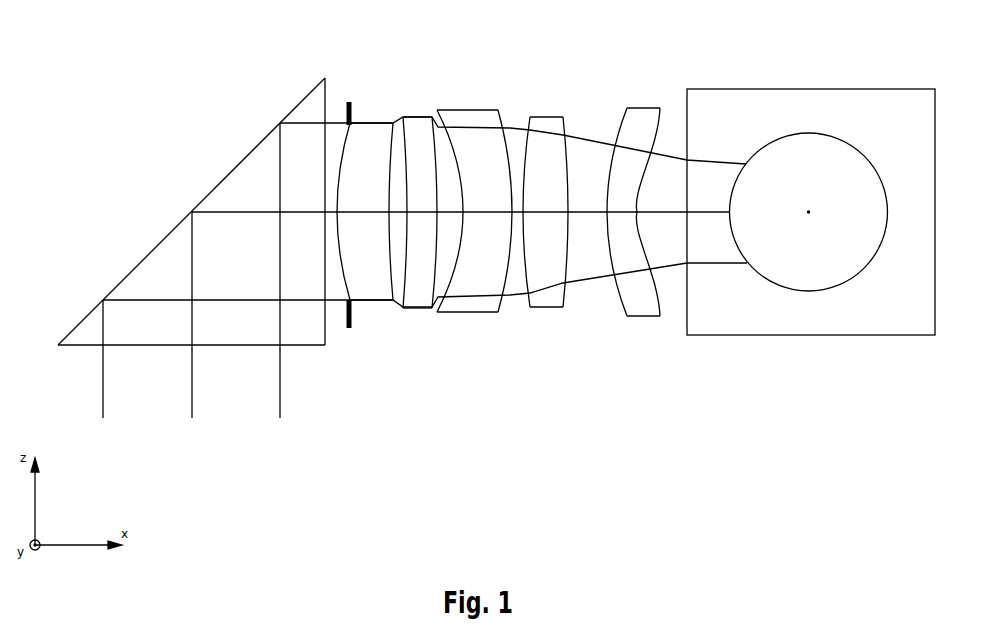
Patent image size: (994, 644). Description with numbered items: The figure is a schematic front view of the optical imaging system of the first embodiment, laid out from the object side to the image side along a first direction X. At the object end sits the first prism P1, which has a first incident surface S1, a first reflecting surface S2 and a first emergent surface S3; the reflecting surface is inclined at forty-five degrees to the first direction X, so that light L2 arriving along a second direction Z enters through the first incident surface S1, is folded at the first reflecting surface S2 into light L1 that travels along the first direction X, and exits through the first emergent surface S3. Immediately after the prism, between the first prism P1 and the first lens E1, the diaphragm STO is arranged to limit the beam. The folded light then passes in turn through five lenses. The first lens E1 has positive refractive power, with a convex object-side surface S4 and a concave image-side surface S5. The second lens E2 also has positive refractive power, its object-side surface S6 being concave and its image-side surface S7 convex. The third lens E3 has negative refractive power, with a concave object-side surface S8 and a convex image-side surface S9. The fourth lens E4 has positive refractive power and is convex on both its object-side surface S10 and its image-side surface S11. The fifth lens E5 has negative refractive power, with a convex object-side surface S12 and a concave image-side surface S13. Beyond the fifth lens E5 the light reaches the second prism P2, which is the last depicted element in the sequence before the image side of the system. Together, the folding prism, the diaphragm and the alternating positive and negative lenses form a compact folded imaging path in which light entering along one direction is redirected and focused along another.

The light propagated along the first direction L1 is at (433, 115).
The light incident along the second direction L2 is at (123, 218).
The first prism P1 is at (215, 284).
The diaphragm STO is at (347, 105).
The first lens E1 is at (394, 283).
The second lens E2 is at (462, 283).
The third lens E3 is at (517, 283).
The fourth lens E4 is at (611, 283).
The fifth lens E5 is at (704, 283).
The second prism P2 is at (811, 176).
The first incident surface S1 is at (191, 446).
The first reflecting surface S2 is at (191, 313).
The first emergent surface S3 is at (348, 313).
The object-side surface of the first lens S4 is at (374, 335).
The image-side surface of the first lens S5 is at (420, 335).
The object-side surface of the second lens S6 is at (445, 332).
The image-side surface of the second lens S7 is at (476, 332).
The object-side surface of the third lens S8 is at (499, 329).
The image-side surface of the third lens S9 is at (547, 329).
The object-side surface of the fourth lens S10 is at (586, 332).
The image-side surface of the fourth lens S11 is at (631, 332).
The object-side surface of the fifth lens S12 is at (678, 328).
The image-side surface of the fifth lens S13 is at (718, 328).